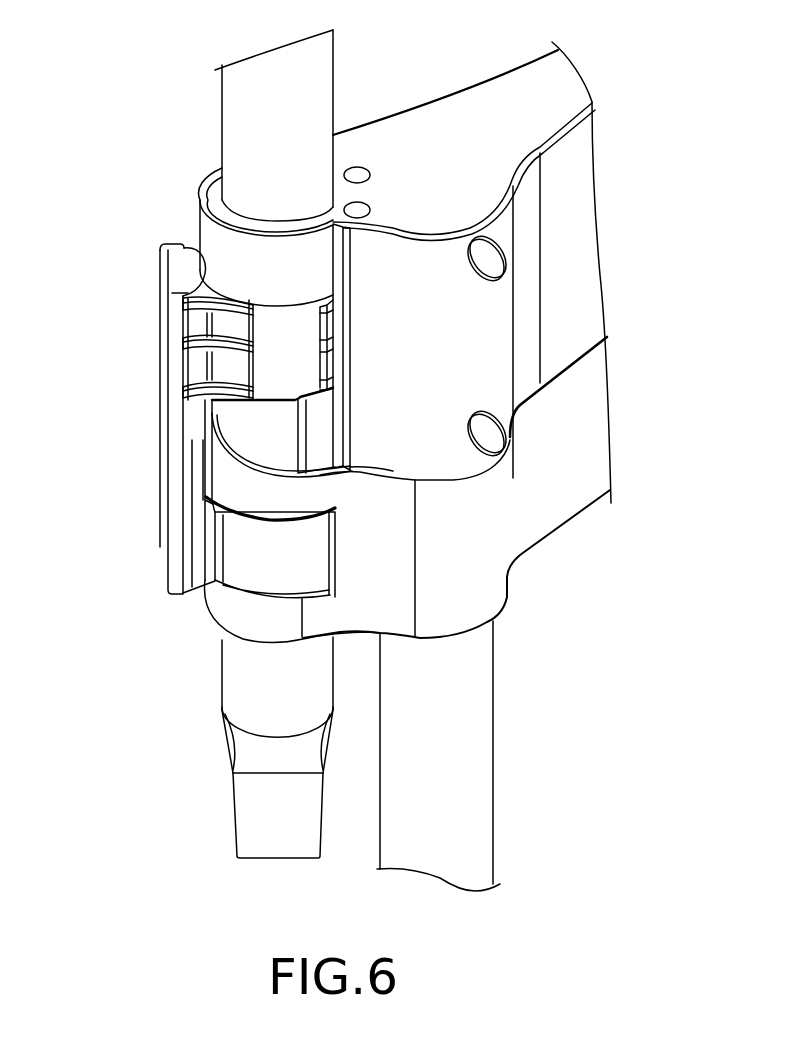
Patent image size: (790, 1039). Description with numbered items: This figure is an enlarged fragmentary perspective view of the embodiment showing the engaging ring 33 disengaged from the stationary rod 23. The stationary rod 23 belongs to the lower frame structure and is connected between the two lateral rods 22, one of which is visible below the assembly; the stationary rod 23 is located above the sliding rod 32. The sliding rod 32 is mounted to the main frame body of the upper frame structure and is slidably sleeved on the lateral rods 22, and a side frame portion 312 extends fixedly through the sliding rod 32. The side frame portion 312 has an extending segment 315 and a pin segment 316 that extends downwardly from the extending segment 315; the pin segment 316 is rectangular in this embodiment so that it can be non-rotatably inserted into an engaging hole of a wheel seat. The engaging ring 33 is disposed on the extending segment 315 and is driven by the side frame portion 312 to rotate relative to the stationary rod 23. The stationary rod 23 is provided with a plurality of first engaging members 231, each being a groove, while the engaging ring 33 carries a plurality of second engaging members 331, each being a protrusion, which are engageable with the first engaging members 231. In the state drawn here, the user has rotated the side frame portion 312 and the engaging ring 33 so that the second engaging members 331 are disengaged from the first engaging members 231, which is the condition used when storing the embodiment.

The side frame portion 312 is at (195, 99).
The extending segment 315 is at (256, 137).
The stationary rod 23 is at (415, 145).
The engaging ring 33 is at (173, 272).
The second engaging member 331 is at (192, 307).
The first engaging member 231 is at (334, 379).
The sliding rod 32 is at (557, 453).
The pin segment 316 is at (250, 818).
The lateral rod 22 is at (460, 805).